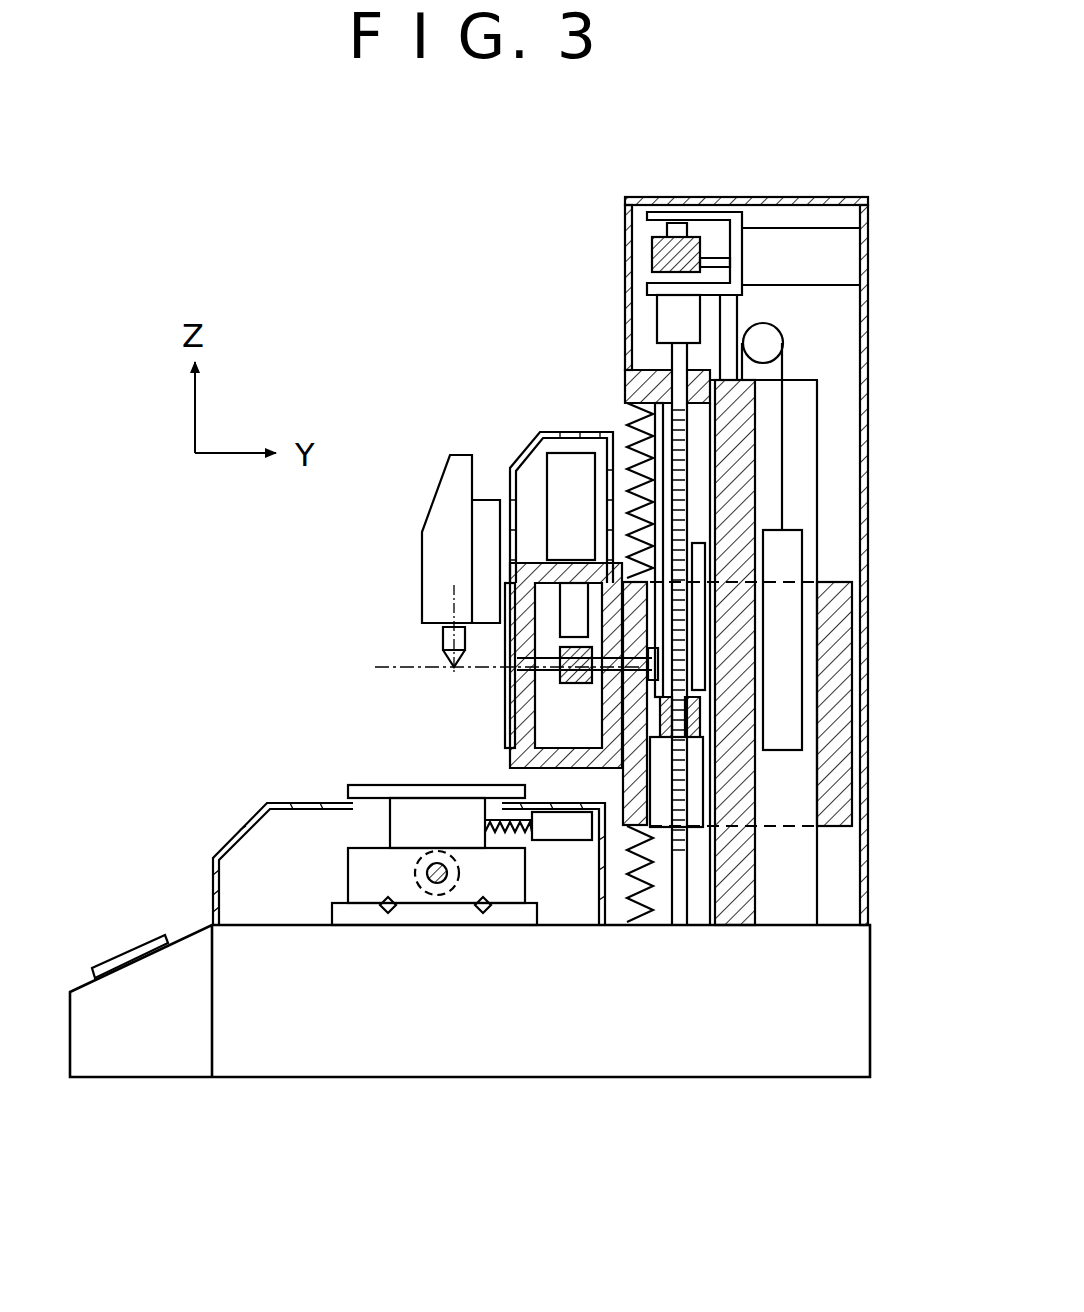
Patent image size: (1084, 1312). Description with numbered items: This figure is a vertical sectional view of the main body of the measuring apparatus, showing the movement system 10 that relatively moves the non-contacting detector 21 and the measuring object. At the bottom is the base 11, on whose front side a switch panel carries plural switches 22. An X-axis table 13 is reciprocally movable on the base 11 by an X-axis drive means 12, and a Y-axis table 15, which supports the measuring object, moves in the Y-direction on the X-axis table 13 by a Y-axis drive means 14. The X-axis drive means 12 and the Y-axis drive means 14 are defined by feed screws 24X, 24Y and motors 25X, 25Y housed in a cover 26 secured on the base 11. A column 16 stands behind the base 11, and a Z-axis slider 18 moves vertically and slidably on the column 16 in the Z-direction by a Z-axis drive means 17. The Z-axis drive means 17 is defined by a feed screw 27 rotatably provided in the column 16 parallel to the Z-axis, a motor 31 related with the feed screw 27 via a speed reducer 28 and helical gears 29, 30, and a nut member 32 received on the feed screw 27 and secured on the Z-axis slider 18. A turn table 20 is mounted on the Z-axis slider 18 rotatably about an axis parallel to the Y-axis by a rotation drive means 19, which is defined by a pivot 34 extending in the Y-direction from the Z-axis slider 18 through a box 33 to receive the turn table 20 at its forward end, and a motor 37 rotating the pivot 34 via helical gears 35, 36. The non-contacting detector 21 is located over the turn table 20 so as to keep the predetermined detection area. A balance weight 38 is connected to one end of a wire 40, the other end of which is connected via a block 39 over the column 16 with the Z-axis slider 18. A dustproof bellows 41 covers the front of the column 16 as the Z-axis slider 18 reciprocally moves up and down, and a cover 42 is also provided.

The movement system 10 is at (305, 655).
The base 11 is at (312, 1078).
The X-axis drive means 12 is at (508, 1000).
The X-axis table 13 is at (358, 878).
The Y-axis drive means 14 is at (690, 1010).
The Y-axis table 15 is at (370, 785).
The column 16 is at (760, 900).
The Z-axis drive means 17 is at (808, 165).
The Z-axis slider 18 is at (840, 748).
The rotation drive means 19 is at (538, 418).
The turn table 20 is at (500, 752).
The non-contacting detector 21 is at (430, 535).
The switches 22 is at (130, 955).
The feed screw 24X is at (432, 884).
The motor 25X is at (445, 896).
The feed screw 24Y is at (500, 852).
The motor 25Y is at (572, 842).
The cover 26 is at (245, 835).
The feed screw 27 is at (688, 910).
The speed reducer 28 is at (665, 318).
The helical gear 29 is at (655, 250).
The helical gear 30 is at (660, 215).
The motor 31 is at (843, 235).
The nut member 32 is at (693, 740).
The box 33 is at (510, 520).
The pivot 34 is at (585, 690).
The helical gear 35 is at (560, 672).
The helical gear 36 is at (458, 672).
The motor 37 is at (575, 460).
The balance weight 38 is at (795, 553).
The block 39 is at (778, 330).
The wire 40 is at (782, 458).
The dustproof bellows 41 is at (640, 905).
The cover 42 is at (868, 350).